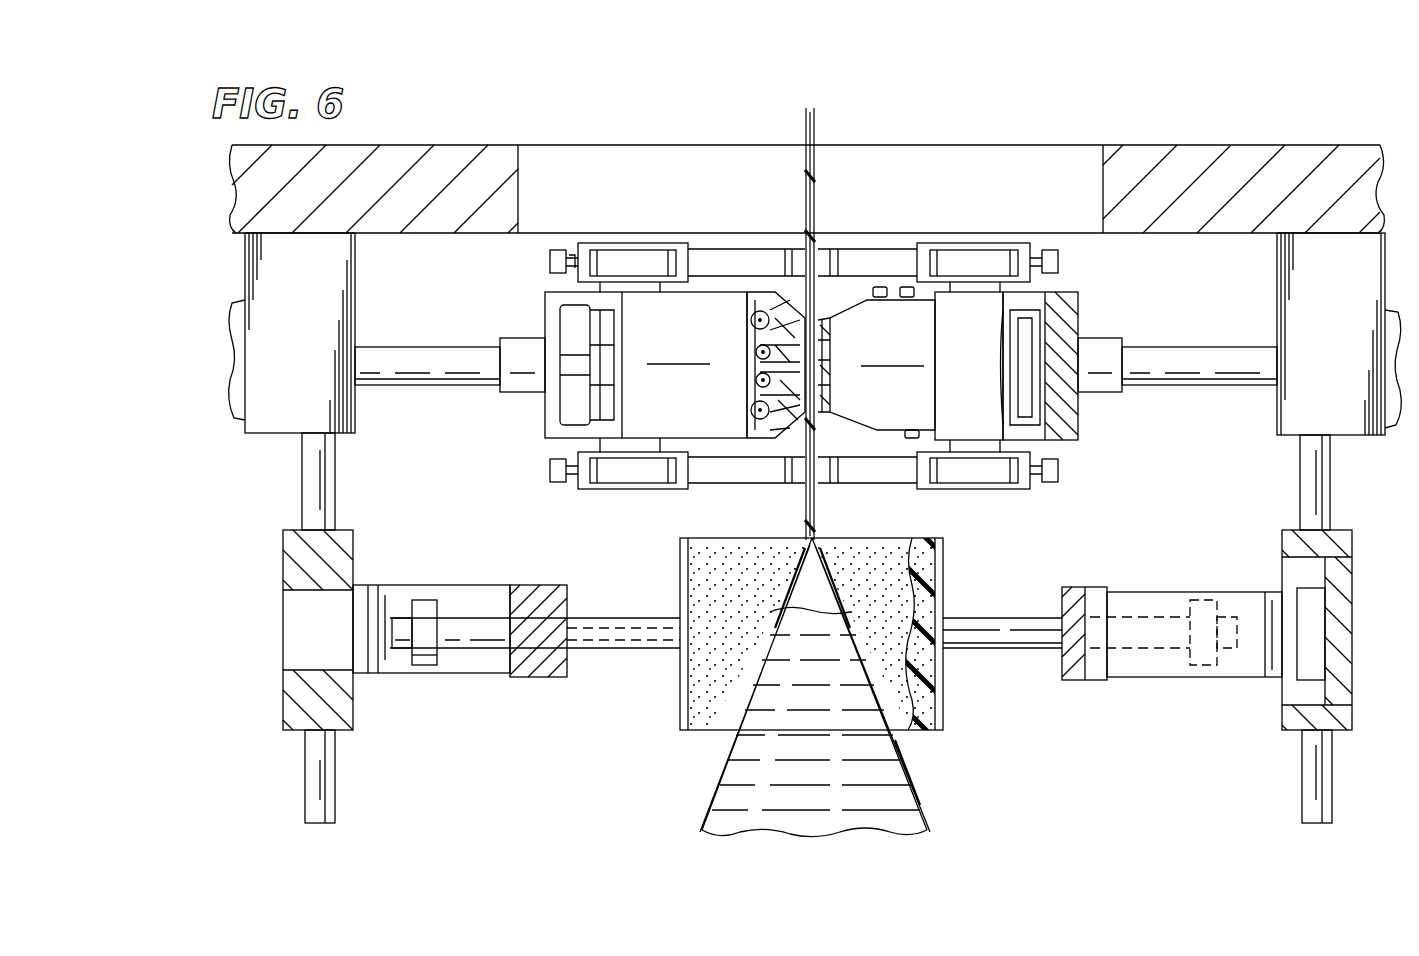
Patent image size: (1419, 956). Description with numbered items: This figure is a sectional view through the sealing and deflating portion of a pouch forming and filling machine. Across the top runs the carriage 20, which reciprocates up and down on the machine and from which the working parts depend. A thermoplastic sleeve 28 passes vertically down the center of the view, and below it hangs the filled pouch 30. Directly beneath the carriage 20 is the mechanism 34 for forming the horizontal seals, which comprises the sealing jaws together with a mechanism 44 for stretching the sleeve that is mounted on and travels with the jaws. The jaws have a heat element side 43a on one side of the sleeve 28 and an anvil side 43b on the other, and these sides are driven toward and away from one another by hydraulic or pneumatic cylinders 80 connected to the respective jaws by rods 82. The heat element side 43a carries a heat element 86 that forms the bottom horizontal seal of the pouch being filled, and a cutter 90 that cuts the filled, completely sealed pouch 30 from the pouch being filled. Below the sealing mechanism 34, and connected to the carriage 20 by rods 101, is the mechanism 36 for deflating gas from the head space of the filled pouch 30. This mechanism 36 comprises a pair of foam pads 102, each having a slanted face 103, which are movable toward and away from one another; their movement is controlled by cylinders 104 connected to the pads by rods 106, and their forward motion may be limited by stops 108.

The carriage 20 is at (458, 145).
The sleeve 28 is at (818, 125).
The filled pouch 30 is at (722, 772).
The mechanism for forming the horizontal seals 34 is at (1093, 450).
The mechanism for deflating 36 is at (640, 725).
The heat element side 43a is at (675, 318).
The anvil side 43b is at (948, 363).
The mechanism for stretching the sleeve 44 is at (718, 257).
The cylinders 80 is at (237, 430).
The rods 82 is at (428, 365).
The heat element 86 is at (800, 300).
The cutter 90 is at (752, 378).
The rods 101 is at (326, 478).
The foam pads 102 is at (712, 710).
The slanted face 103 is at (804, 541).
The cylinders 104 is at (817, 634).
The rods 106 is at (606, 628).
The stops 108 is at (428, 650).